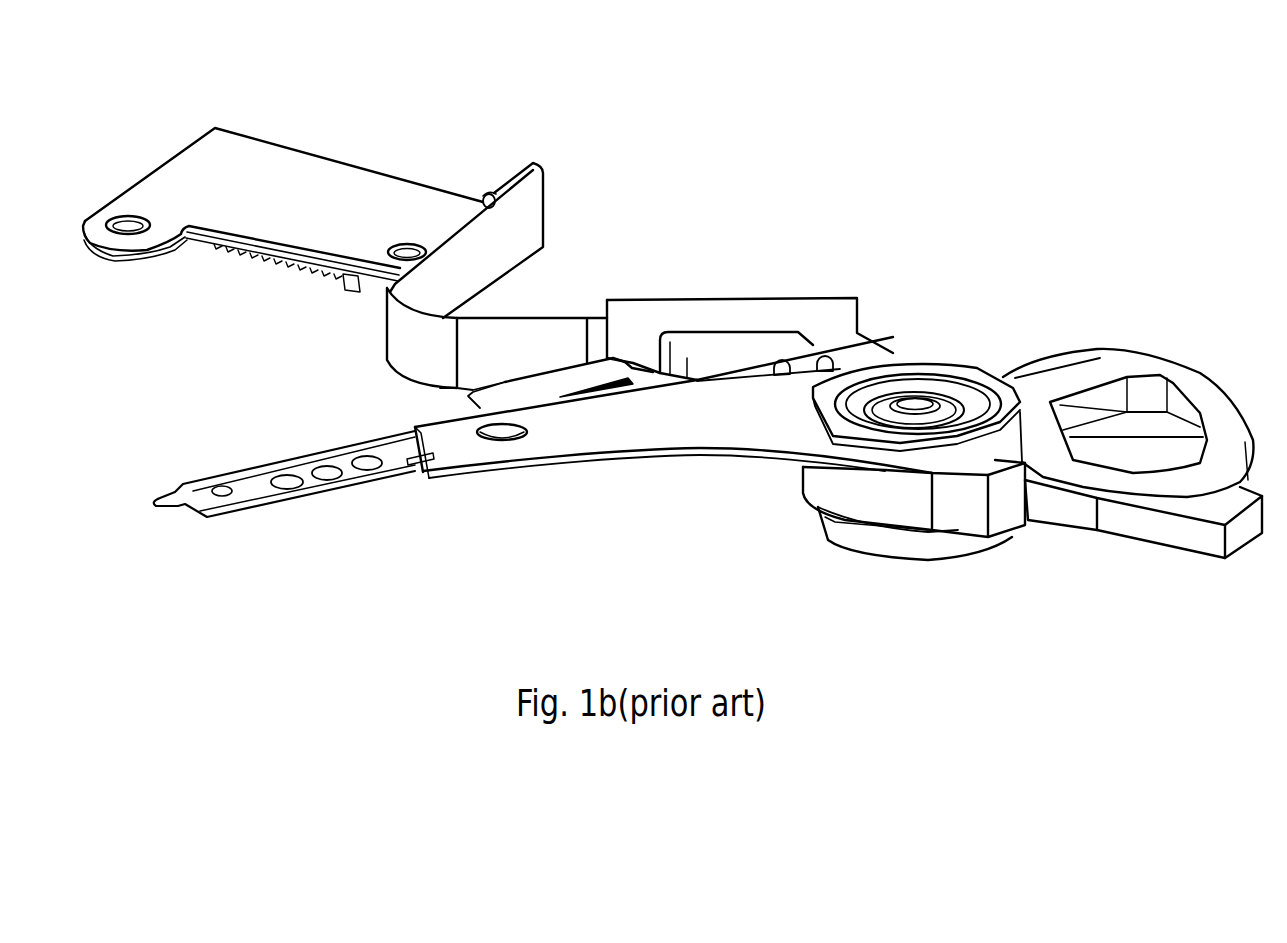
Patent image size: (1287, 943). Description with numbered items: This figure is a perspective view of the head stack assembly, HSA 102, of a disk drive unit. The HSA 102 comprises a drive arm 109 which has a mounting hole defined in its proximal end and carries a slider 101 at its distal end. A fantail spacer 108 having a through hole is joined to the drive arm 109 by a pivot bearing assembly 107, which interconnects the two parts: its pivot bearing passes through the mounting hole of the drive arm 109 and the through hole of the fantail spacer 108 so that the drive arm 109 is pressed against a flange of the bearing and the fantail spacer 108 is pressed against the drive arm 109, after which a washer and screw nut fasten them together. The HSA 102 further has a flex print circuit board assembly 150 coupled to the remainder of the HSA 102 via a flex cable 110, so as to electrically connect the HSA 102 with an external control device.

The slider 101 is at (250, 517).
The HSA 102 is at (667, 623).
The pivot bearing assembly 107 is at (933, 383).
The fantail spacer 108 is at (1090, 377).
The drive arm 109 is at (637, 432).
The flex cable 110 is at (524, 335).
The flex print circuit board assembly (FPCBA) 150 is at (352, 190).